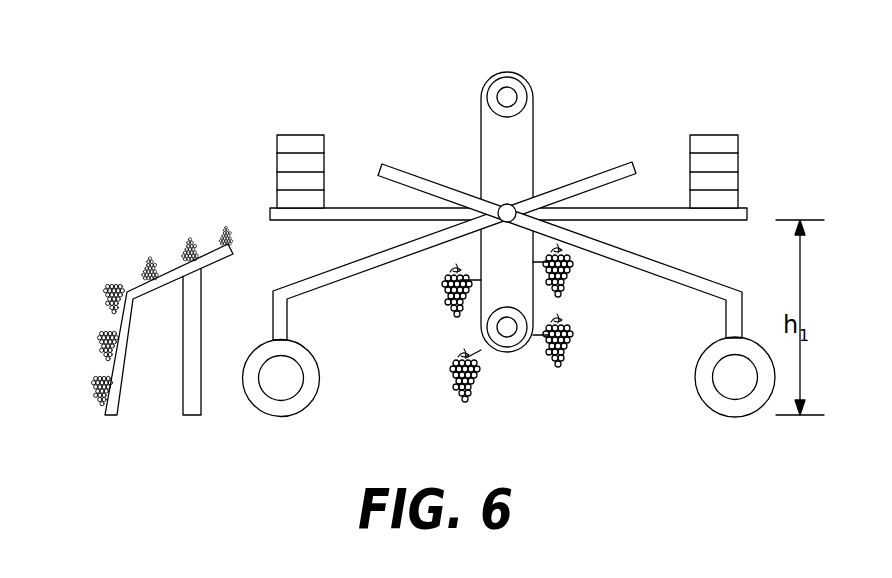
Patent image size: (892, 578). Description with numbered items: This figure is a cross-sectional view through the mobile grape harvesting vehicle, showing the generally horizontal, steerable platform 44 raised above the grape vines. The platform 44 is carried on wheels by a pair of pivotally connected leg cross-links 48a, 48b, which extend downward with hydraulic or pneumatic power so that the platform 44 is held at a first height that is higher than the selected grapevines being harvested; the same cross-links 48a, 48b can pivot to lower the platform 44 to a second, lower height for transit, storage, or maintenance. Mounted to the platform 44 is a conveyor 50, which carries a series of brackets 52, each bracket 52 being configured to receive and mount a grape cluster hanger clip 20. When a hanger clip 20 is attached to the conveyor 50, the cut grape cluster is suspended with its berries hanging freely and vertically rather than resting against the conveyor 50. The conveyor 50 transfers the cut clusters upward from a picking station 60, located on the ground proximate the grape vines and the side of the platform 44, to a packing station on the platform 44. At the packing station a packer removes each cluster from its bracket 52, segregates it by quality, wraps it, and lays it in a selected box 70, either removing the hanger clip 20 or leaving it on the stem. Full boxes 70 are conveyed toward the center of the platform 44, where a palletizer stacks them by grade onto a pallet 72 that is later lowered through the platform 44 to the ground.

The grape cluster hanger clip 20 is at (542, 340).
The platform 44 is at (270, 213).
The cross-link 48a is at (355, 278).
The cross-link 48b is at (657, 278).
The conveyor 50 is at (481, 123).
The bracket 52 is at (481, 290).
The picking station 60 is at (167, 396).
The box 70 is at (290, 143).
The pallet 72 is at (700, 145).